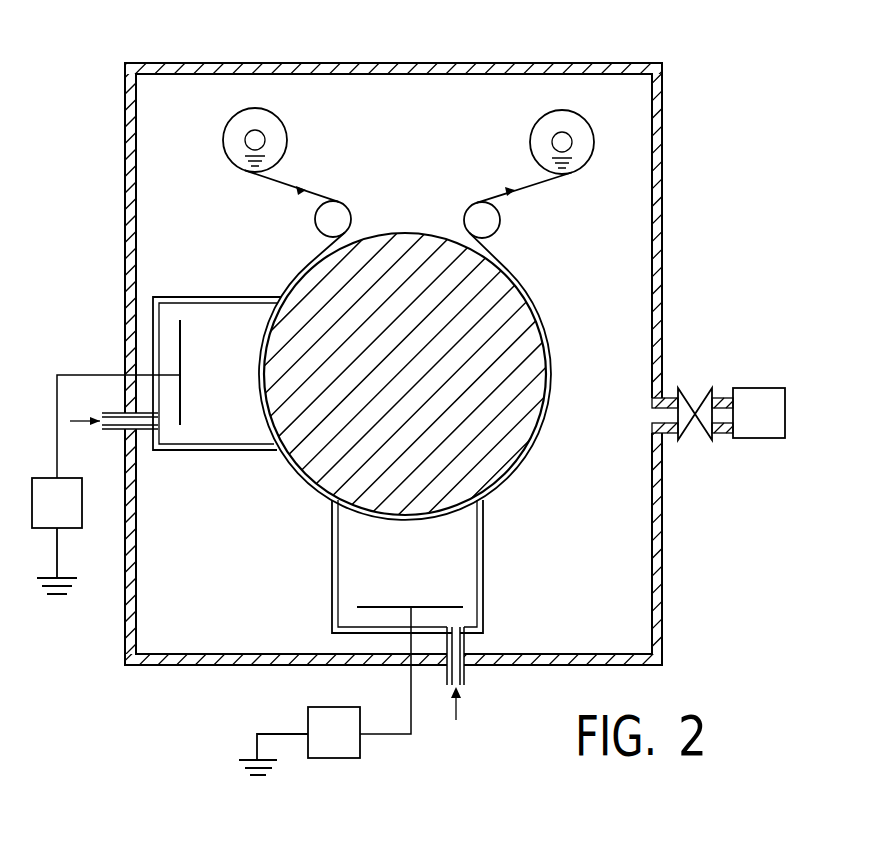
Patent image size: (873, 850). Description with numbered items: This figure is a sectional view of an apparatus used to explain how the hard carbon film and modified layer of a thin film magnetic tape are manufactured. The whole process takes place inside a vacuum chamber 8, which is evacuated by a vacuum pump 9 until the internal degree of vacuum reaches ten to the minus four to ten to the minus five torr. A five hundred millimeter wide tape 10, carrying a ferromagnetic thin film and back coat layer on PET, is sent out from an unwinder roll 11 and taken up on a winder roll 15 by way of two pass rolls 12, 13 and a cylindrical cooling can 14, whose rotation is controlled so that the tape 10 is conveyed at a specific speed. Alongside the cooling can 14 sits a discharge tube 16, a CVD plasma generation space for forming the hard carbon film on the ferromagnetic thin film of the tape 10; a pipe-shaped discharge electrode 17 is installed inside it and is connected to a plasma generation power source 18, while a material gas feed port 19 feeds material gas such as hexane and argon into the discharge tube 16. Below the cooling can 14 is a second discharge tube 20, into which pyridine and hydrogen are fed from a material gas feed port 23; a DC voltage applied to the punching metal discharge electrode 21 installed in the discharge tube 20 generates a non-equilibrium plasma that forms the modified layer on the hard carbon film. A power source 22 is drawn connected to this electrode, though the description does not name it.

The vacuum chamber 8 is at (580, 665).
The vacuum pump 9 is at (718, 414).
The tape 10 is at (318, 190).
The unwinder roll 11 is at (256, 140).
The pass roll 12 is at (333, 217).
The pass roll 13 is at (482, 221).
The cylindrical cooling can 14 is at (543, 346).
The winder roll 15 is at (552, 138).
The discharge tube 16 is at (200, 297).
The pipe-shaped discharge electrode 17 is at (183, 407).
The plasma generation power source 18 is at (106, 484).
The material gas feed port 19 is at (114, 404).
The discharge tube 20 is at (332, 607).
The punching metal discharge electrode 21 is at (442, 606).
The second power source 22 is at (325, 691).
The material gas feed port 23 is at (467, 678).